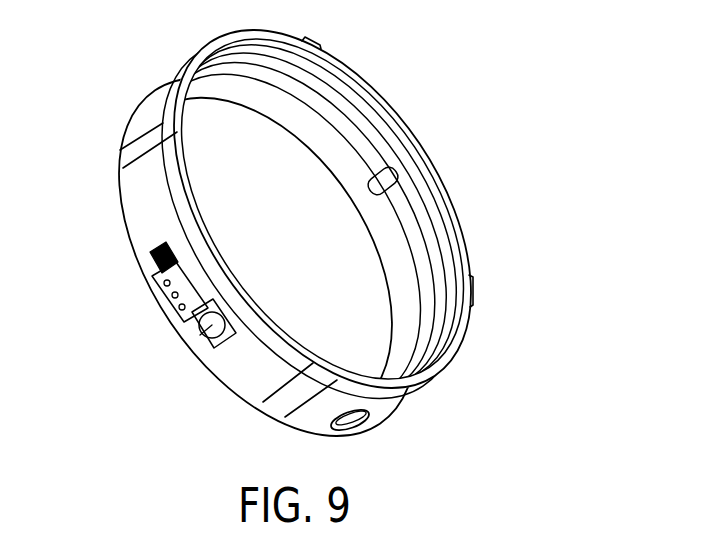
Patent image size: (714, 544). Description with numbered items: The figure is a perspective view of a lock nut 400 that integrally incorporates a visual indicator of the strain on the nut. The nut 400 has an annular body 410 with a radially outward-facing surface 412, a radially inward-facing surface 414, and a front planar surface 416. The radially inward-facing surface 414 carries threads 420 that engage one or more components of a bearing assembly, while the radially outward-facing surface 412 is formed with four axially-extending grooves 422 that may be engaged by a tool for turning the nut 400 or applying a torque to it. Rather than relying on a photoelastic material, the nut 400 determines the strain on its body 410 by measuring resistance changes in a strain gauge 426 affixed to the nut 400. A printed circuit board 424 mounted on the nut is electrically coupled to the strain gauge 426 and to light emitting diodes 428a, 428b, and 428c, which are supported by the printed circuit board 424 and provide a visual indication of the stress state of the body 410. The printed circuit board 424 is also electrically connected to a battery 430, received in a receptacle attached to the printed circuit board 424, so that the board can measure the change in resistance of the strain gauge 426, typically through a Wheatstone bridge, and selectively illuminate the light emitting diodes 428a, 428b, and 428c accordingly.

The nut 400 is at (470, 124).
The annular body 410 is at (257, 322).
The radially outward-facing surface 412 is at (243, 373).
The radially inward-facing surface 414 is at (369, 197).
The front planar surface 416 is at (435, 366).
The threads 420 is at (406, 256).
The axially-extending grooves 422 is at (307, 42).
The printed circuit board 424 is at (200, 283).
The strain gauge 426 is at (160, 265).
The light emitting diode 428a is at (164, 285).
The light emitting diode 428b is at (172, 297).
The light emitting diode 428c is at (180, 309).
The battery 430 is at (198, 332).